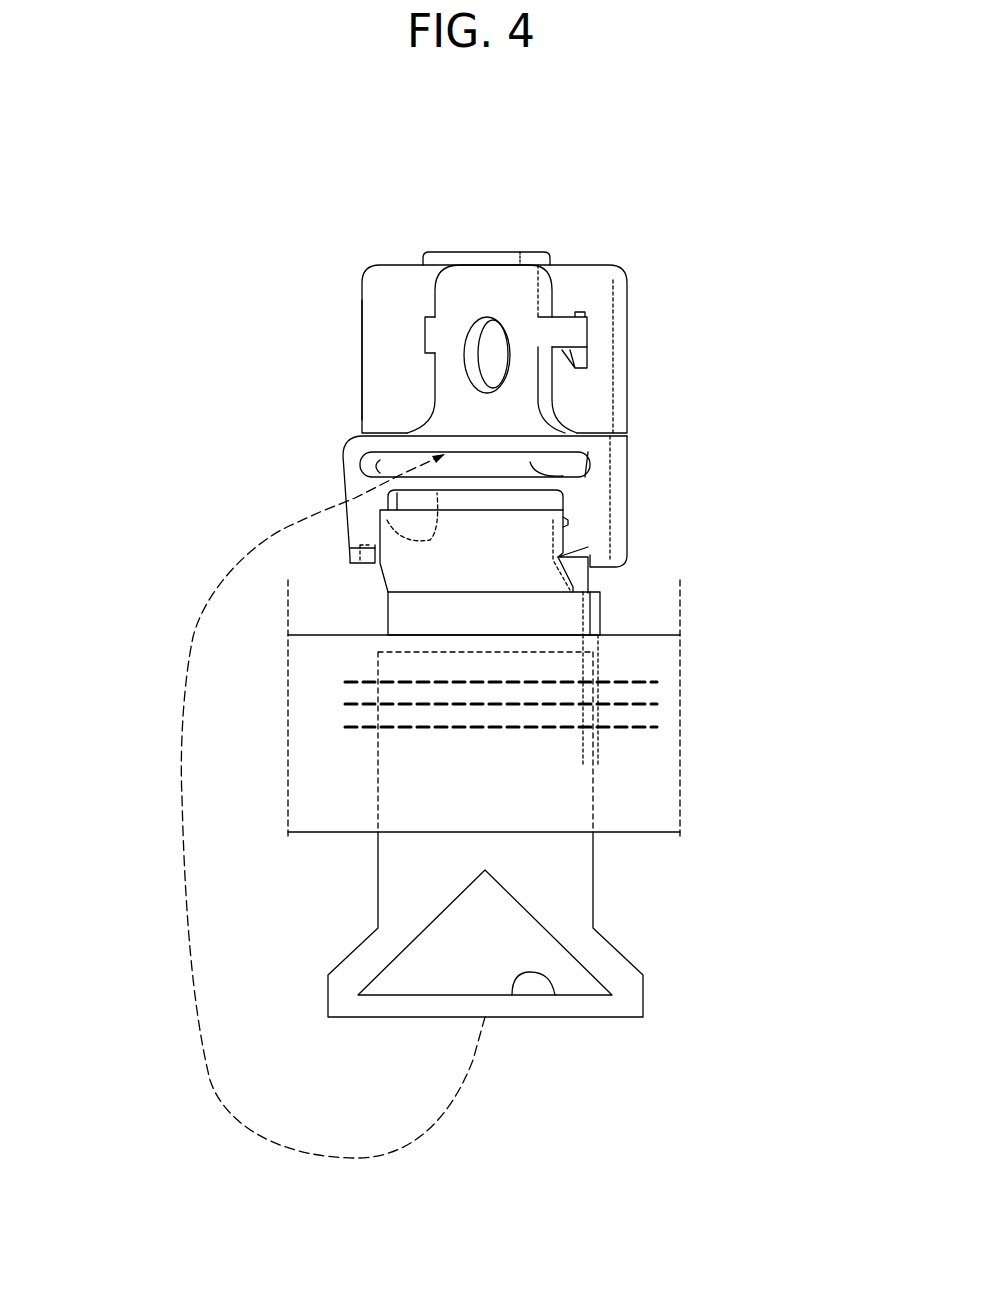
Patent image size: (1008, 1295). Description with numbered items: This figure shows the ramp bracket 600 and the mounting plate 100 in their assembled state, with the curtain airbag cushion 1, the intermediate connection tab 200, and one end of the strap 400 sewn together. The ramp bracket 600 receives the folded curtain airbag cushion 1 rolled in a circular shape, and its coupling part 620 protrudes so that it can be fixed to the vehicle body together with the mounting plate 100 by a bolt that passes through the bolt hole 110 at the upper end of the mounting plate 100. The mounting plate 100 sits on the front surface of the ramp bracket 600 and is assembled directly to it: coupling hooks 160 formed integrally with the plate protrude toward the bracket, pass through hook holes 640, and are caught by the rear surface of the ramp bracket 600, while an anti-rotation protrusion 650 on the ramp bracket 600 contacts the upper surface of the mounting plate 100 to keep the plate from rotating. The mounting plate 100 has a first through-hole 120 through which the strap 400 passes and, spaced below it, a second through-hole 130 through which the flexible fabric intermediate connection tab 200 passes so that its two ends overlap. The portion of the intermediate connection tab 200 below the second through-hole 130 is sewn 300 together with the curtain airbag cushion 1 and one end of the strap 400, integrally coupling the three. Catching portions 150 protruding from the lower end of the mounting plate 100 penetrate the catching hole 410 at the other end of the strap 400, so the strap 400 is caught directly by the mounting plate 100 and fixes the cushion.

The curtain airbag cushion 1 is at (315, 757).
The mounting plate 100 is at (443, 526).
The bolt hole 110 is at (490, 322).
The first through-hole 120 is at (590, 466).
The second through-hole 130 is at (345, 532).
The catching portion 150 is at (350, 557).
The coupling hook 160 is at (432, 335).
The intermediate connection tab 200 is at (438, 612).
The sewn portion 300 is at (657, 682).
The strap 400 is at (570, 903).
The catching hole 410 is at (555, 995).
The ramp bracket 600 is at (529, 303).
The coupling part 620 is at (378, 297).
The hook hole 640 is at (588, 335).
The anti-rotation protrusion 650 is at (468, 257).